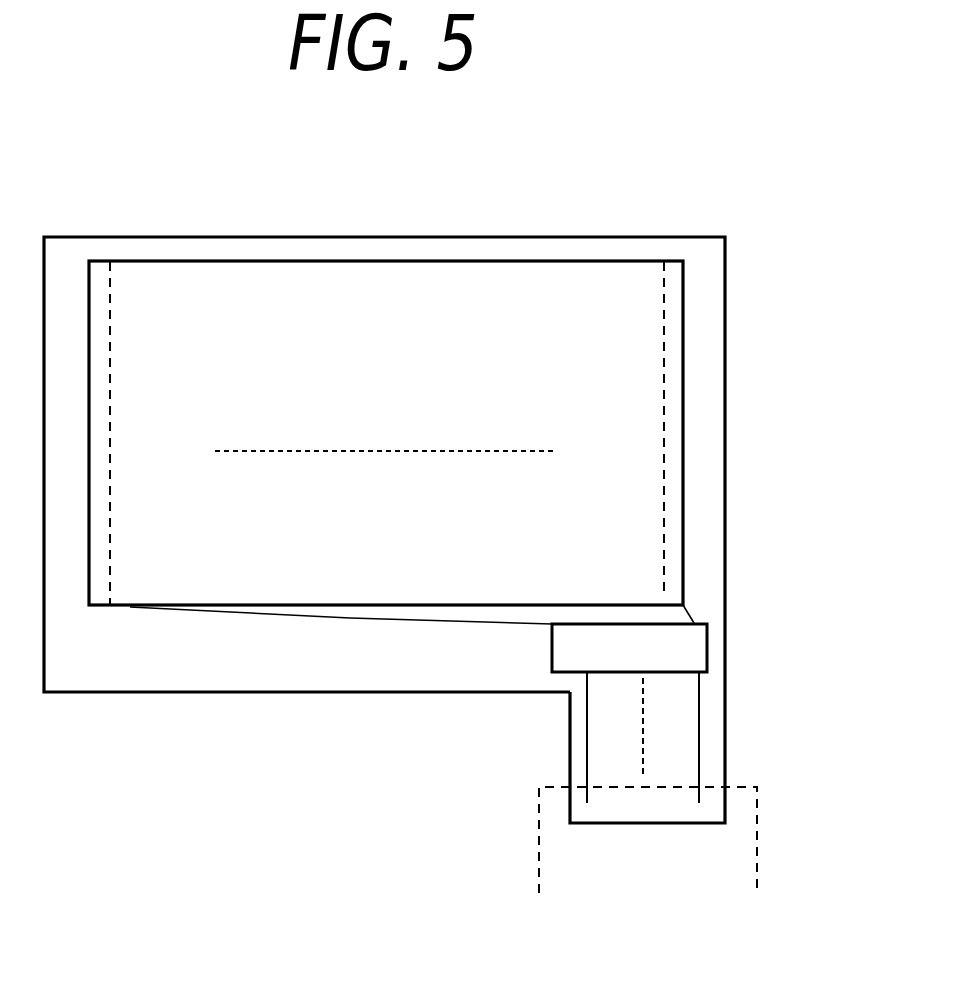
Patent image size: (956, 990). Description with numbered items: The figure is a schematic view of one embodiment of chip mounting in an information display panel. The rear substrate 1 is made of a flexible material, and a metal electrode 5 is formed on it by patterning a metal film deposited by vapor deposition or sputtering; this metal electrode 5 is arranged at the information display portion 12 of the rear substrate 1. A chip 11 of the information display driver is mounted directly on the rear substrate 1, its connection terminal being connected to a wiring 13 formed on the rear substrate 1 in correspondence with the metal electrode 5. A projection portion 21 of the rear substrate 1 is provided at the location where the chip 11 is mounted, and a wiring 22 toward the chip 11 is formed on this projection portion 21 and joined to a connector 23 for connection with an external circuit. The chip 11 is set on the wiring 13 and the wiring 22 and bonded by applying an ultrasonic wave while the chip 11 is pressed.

The rear substrate 1 is at (725, 463).
The metal electrode 5 is at (663, 368).
The chip 11 is at (680, 651).
The information display portion 12 is at (528, 292).
The wiring 13 is at (425, 620).
The projection portion 21 is at (725, 763).
The wiring 22 is at (700, 720).
The connector 23 is at (563, 850).